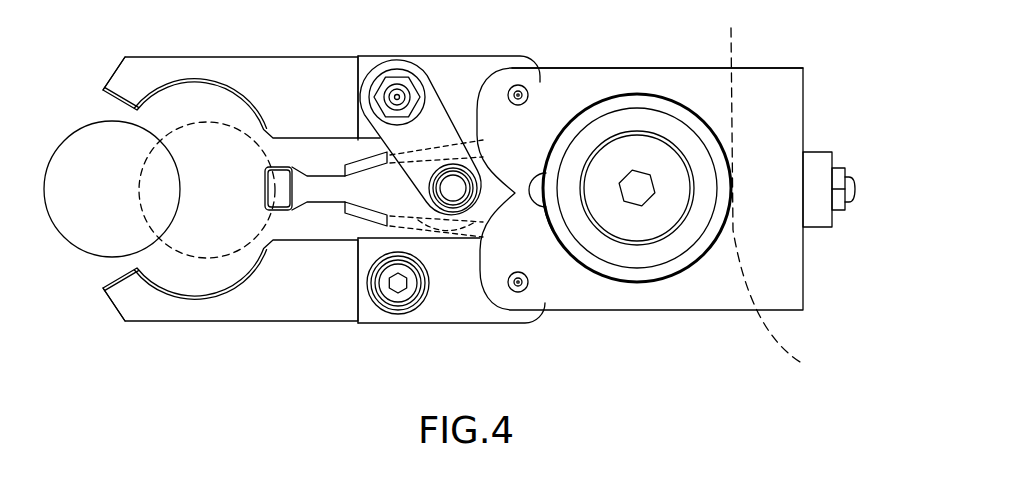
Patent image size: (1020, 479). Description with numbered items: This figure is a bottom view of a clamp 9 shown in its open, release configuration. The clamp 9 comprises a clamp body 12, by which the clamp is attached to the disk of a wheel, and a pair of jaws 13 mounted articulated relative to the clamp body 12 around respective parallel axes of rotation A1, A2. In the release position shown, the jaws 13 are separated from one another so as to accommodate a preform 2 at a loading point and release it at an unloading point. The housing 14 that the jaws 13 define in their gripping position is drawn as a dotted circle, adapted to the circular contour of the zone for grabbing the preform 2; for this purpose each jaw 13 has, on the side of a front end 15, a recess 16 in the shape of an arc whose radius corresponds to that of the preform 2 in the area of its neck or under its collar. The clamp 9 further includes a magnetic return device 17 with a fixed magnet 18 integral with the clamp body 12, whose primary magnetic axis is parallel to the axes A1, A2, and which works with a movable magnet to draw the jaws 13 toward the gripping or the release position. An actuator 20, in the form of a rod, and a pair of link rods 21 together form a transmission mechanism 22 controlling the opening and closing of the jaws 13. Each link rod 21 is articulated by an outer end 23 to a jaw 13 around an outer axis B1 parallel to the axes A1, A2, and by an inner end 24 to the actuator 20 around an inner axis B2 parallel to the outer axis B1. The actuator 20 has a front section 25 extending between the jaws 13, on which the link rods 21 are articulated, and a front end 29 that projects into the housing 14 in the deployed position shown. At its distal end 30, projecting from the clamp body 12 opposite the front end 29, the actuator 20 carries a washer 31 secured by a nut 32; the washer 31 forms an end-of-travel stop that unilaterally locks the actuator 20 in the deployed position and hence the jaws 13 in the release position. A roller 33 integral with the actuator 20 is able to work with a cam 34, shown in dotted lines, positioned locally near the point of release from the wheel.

The preform 2 is at (81, 127).
The clamp 9 is at (651, 61).
The clamp body 12 is at (706, 292).
The jaws 13 is at (276, 67).
The housing 14 is at (250, 133).
The front end 15 is at (120, 80).
The recess 16 is at (177, 87).
The magnetic return device 17 is at (542, 211).
The fixed magnet 18 is at (541, 181).
The actuator 20 is at (368, 200).
The link rods 21 is at (426, 143).
The transmission mechanism 22 is at (354, 158).
The outer end 23 is at (383, 72).
The inner end 24 is at (465, 220).
The front section 25 is at (356, 219).
The front end 29 is at (263, 193).
The distal end 30 is at (856, 189).
The washer 31 is at (818, 162).
The nut 32 is at (841, 209).
The roller 33 is at (615, 281).
The cam 34 is at (730, 85).
The axis of rotation A1 is at (526, 280).
The axis of rotation A2 is at (523, 97).
The outer axis B1 is at (407, 94).
The inner axis B2 is at (452, 188).